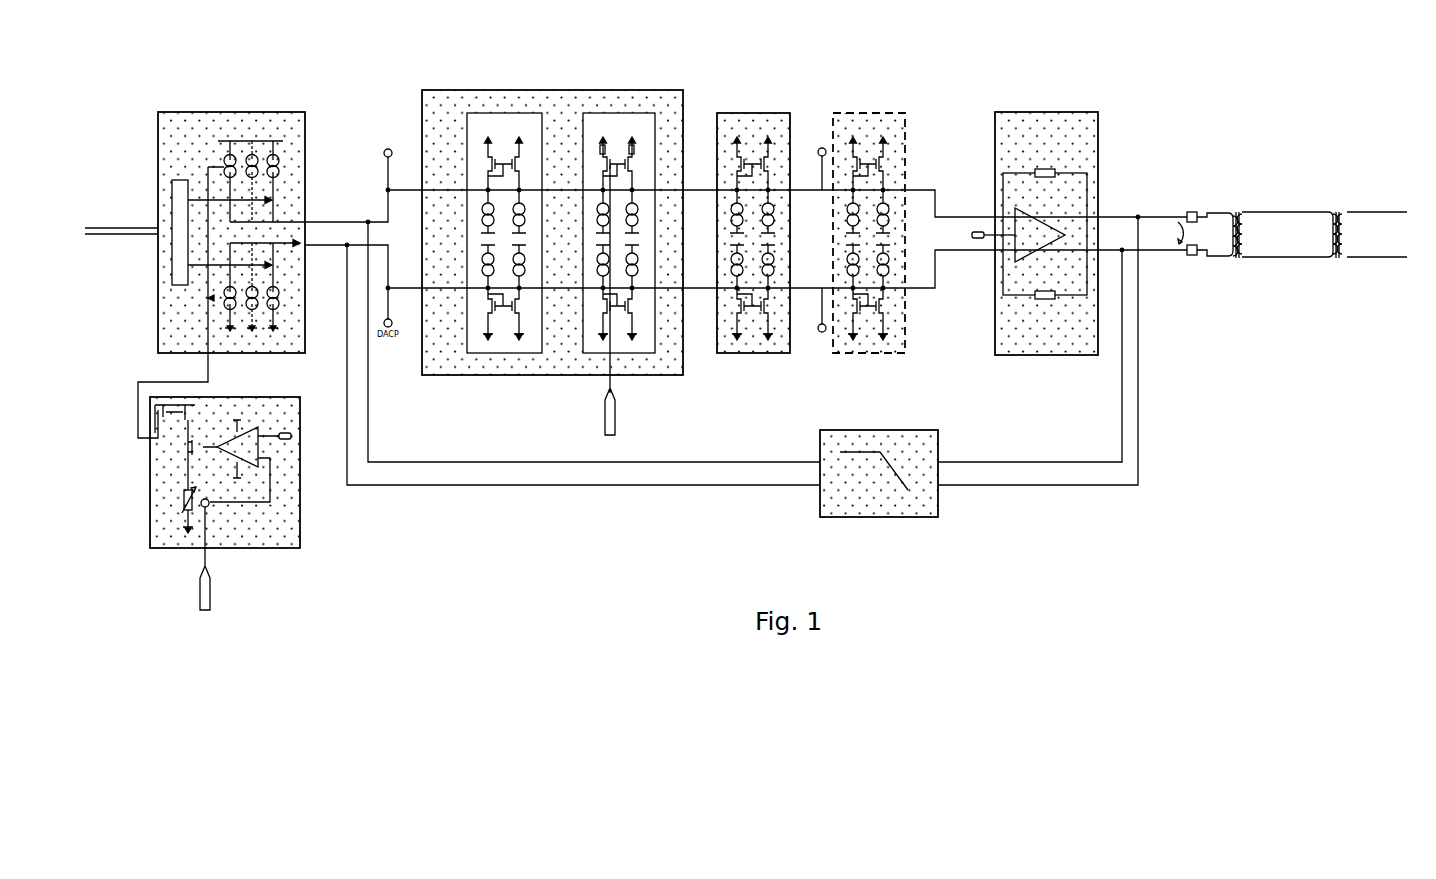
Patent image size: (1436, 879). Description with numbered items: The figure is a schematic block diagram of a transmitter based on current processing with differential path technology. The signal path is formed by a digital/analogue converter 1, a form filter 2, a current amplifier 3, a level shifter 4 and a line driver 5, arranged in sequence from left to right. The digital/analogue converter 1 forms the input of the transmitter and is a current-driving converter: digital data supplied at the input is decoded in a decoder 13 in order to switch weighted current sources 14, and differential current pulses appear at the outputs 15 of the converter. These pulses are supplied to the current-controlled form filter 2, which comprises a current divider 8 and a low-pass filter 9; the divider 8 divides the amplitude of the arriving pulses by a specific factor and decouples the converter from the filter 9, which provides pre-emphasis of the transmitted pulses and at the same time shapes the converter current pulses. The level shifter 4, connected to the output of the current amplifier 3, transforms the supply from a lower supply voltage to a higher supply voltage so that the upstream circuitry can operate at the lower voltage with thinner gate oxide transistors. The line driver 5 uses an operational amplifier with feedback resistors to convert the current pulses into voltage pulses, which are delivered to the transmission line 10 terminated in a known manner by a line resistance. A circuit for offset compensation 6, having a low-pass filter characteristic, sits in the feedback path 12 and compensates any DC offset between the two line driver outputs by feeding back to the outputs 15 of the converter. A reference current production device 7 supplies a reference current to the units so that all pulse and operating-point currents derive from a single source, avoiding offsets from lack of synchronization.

The digital/analogue converter 1 is at (254, 112).
The form filter 2 is at (553, 88).
The current amplifier 3 is at (777, 111).
The level shifter 4 is at (906, 112).
The line driver 5 is at (1073, 108).
The offset compensation circuit 6 is at (880, 518).
The reference current production device 7 is at (283, 548).
The current divider 8 is at (477, 354).
The low-pass filter 9 is at (645, 354).
The transmission line 10 is at (1287, 258).
The feedback path 12 is at (722, 486).
The decoder 13 is at (168, 262).
The weighted current sources 14 is at (284, 152).
The outputs 15 is at (310, 220).